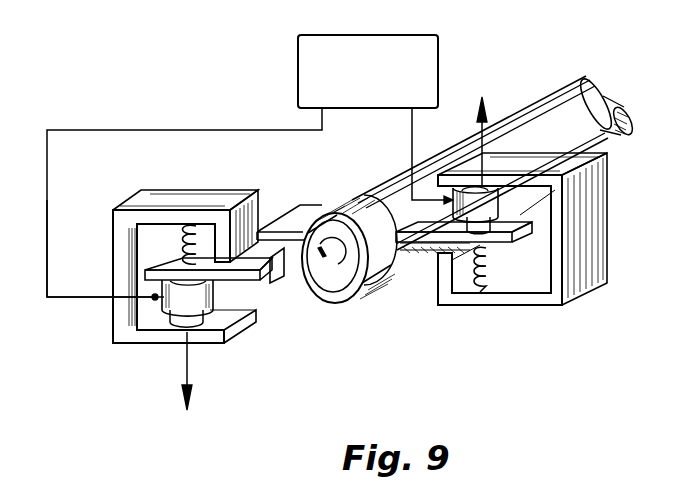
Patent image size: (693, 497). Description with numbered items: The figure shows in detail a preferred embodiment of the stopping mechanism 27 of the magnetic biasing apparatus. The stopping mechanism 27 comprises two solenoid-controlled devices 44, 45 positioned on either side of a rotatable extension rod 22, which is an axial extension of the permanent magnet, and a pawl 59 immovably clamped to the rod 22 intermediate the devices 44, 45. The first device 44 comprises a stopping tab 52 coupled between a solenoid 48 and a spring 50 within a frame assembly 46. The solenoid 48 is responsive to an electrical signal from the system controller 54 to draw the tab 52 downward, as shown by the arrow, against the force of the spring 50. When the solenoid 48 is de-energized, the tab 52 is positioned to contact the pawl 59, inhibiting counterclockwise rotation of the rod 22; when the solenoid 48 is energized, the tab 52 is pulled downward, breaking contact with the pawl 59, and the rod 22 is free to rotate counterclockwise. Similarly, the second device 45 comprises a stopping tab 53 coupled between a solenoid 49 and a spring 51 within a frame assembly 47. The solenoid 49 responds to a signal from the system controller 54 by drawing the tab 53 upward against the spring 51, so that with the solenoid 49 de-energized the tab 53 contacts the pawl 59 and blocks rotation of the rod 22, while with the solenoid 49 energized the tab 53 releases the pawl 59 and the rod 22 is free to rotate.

The rotatable extension rod 22 is at (546, 107).
The stopping mechanism 27 is at (388, 363).
The solenoid-controlled device 44 is at (93, 254).
The solenoid-controlled device 45 is at (552, 236).
The frame assembly 46 is at (180, 190).
The frame assembly 47 is at (593, 285).
The solenoid 48 is at (213, 295).
The solenoid 49 is at (500, 206).
The spring 50 is at (179, 242).
The spring 51 is at (488, 262).
The stopping tab 52 is at (282, 283).
The stopping tab 53 is at (402, 250).
The system controller 54 is at (298, 95).
The pawl 59 is at (313, 210).